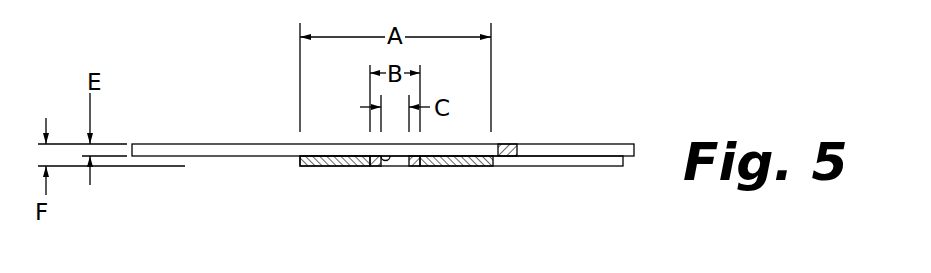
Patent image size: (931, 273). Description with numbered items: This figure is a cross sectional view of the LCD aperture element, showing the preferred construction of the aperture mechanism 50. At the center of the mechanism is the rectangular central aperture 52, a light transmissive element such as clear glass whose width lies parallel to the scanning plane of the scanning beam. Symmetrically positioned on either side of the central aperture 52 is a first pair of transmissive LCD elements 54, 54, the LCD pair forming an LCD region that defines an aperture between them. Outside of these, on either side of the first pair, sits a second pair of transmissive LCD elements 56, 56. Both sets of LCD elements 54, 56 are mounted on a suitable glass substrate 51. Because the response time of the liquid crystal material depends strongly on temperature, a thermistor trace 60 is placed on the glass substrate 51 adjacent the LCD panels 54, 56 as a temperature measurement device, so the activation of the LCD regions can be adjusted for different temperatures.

The aperture mechanism 50 is at (502, 100).
The glass substrate 51 is at (218, 142).
The central aperture 52 is at (390, 165).
The first pair of transmissive LCD elements 54 is at (377, 167).
The second pair of transmissive LCD elements 56 is at (337, 167).
The thermistor trace 60 is at (512, 143).